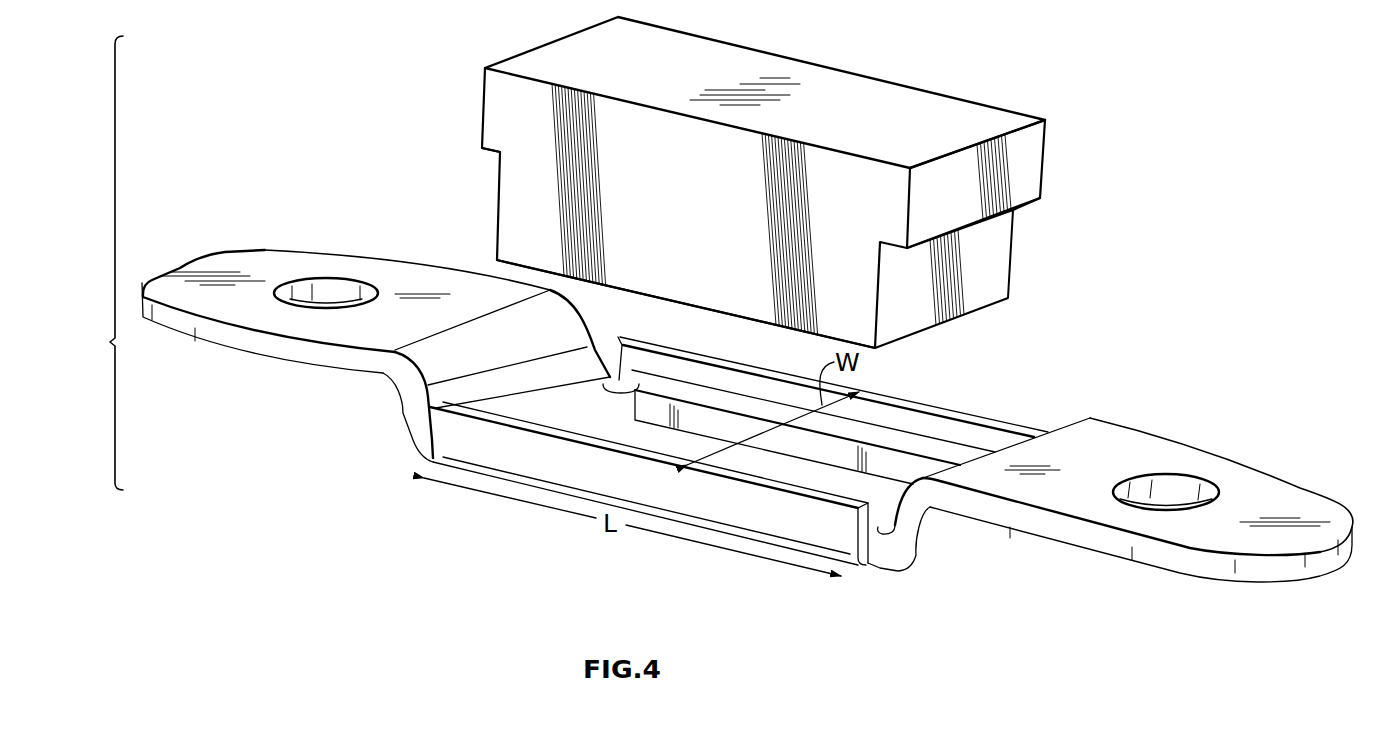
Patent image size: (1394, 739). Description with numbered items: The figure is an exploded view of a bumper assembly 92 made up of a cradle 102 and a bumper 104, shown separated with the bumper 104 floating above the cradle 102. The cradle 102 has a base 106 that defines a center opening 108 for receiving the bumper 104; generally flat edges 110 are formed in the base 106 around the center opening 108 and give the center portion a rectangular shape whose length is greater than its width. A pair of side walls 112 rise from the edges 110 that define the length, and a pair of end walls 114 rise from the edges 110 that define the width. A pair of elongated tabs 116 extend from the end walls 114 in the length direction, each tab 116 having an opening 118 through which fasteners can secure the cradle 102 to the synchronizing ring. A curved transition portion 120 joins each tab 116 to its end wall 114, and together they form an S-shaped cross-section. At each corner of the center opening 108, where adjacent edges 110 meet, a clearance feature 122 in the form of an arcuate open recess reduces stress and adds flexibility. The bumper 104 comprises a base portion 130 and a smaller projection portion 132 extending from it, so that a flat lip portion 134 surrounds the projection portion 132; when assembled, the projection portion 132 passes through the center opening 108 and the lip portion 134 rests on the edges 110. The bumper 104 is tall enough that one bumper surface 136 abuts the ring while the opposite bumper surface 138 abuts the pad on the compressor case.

The bumper assembly 92 is at (101, 263).
The cradle 102 is at (747, 425).
The bumper 104 is at (791, 183).
The base 106 is at (877, 528).
The center opening 108 is at (739, 471).
The edges 110 is at (580, 397).
The side walls 112 is at (910, 405).
The end walls 114 is at (402, 428).
The elongated tabs 116 is at (396, 288).
The opening 118 is at (320, 290).
The curved transition portion 120 is at (397, 389).
The clearance feature 122 is at (612, 376).
The base portion 130 is at (1033, 147).
The projection portion 132 is at (983, 277).
The lip portion 134 is at (483, 163).
The bumper surface 136 is at (880, 107).
The bumper surface 138 is at (693, 308).